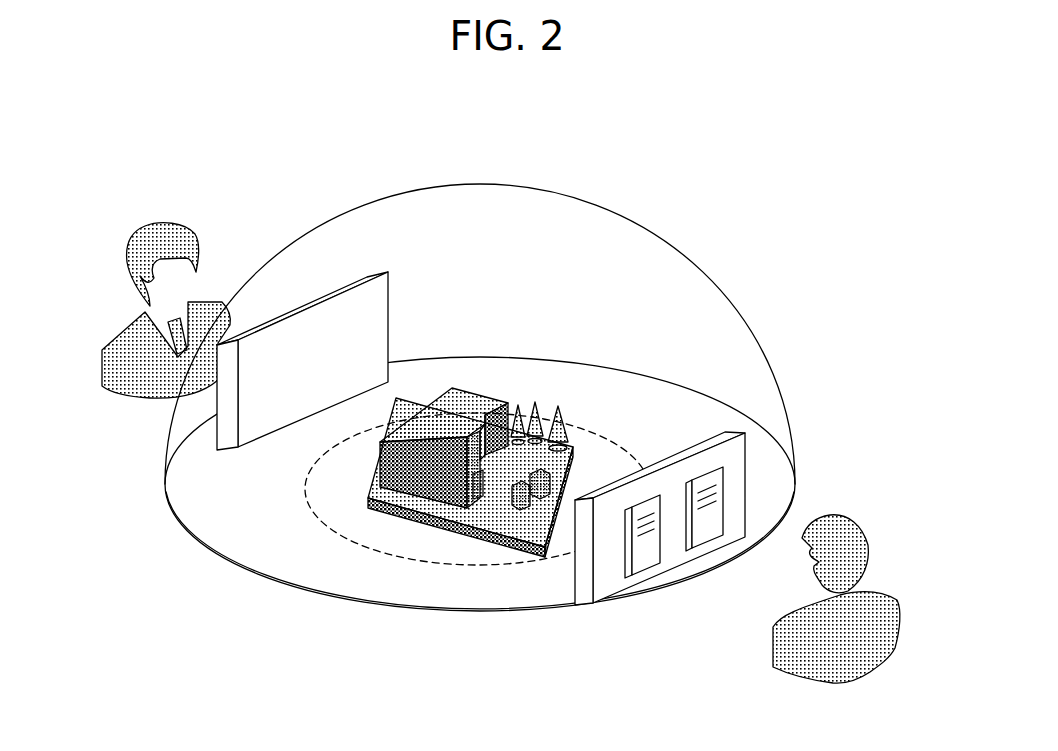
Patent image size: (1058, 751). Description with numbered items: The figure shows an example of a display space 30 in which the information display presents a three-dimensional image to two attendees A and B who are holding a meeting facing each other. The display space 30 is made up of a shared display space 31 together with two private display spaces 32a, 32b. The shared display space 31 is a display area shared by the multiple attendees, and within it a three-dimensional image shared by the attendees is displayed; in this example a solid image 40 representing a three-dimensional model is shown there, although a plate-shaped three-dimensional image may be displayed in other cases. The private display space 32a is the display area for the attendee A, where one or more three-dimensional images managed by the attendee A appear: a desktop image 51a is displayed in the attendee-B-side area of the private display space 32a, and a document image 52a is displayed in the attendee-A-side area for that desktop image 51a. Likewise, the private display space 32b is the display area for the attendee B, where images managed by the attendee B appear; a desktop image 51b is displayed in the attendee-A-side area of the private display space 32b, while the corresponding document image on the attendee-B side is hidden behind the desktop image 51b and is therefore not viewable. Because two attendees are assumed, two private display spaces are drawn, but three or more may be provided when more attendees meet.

The display space 30 is at (750, 216).
The shared display space 31 is at (598, 376).
The private display space 32a is at (851, 558).
The private display space 32b is at (157, 282).
The solid image 40 is at (460, 405).
The desktop image 51a is at (694, 519).
The desktop image 51b is at (379, 270).
The document image 52a is at (712, 525).
The attendee A is at (868, 537).
The attendee B is at (141, 238).